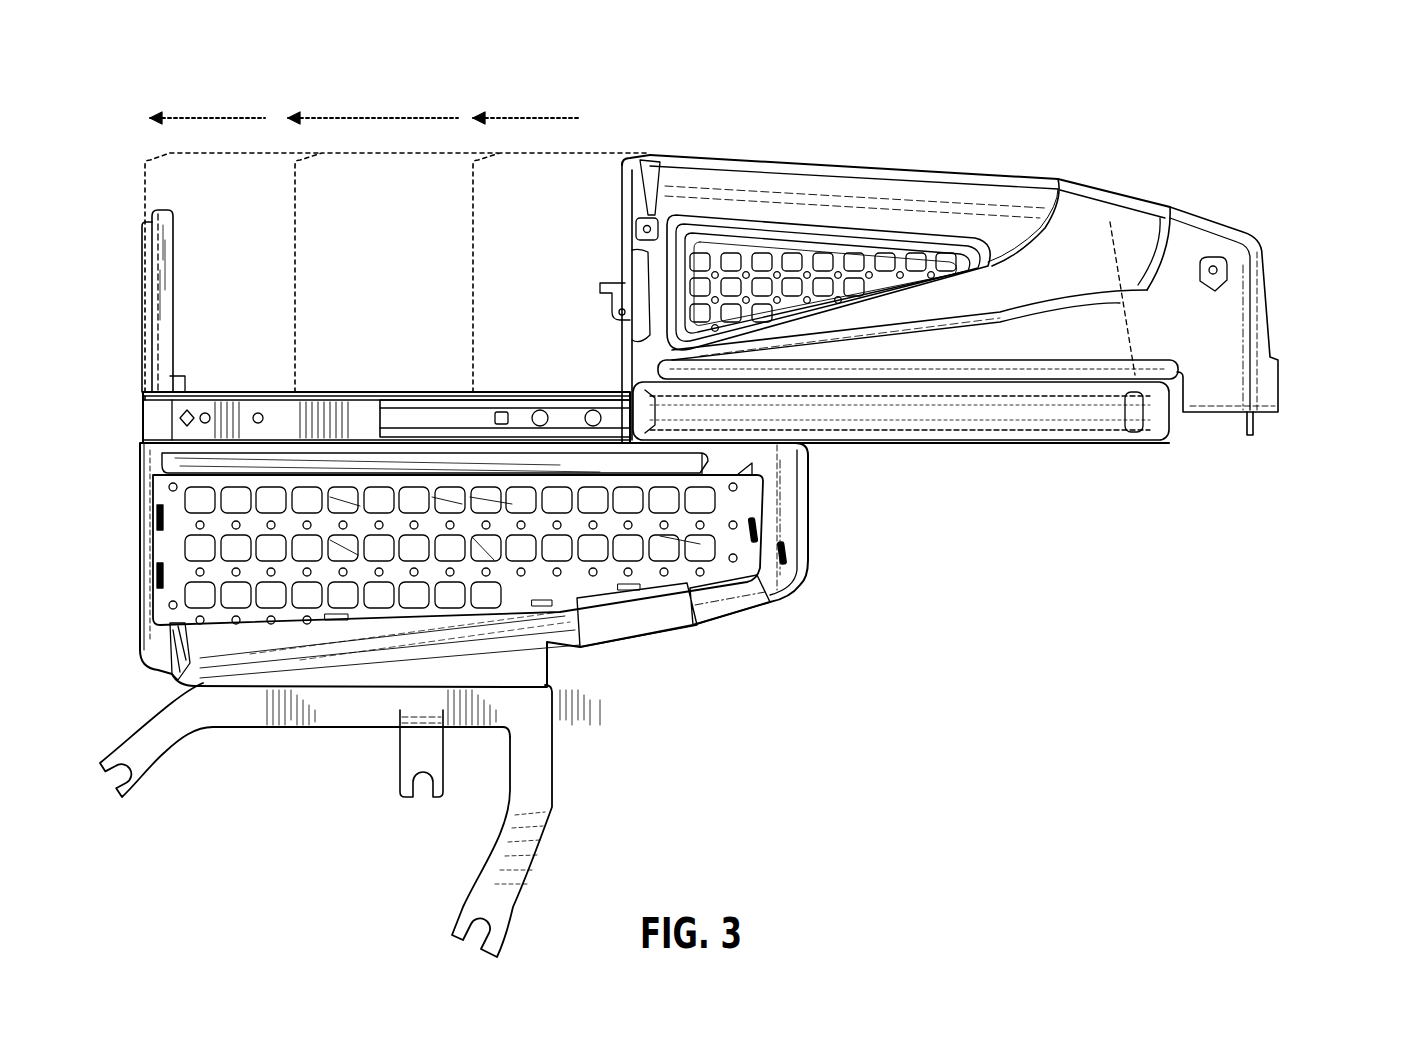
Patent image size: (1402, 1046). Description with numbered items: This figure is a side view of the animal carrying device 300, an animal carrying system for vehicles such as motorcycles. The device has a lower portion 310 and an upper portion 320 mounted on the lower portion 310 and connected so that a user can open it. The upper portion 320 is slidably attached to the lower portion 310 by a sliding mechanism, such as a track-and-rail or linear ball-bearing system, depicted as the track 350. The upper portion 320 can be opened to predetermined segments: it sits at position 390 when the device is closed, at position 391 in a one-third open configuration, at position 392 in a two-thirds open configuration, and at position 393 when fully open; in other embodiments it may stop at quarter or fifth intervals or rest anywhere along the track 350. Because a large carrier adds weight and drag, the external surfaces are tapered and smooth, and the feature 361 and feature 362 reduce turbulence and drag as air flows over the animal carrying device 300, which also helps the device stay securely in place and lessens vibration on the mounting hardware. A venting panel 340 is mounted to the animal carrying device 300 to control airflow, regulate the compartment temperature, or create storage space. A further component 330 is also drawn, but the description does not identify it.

The animal carrying device 300 is at (952, 687).
The lower portion 310 is at (735, 615).
The upper portion 320 is at (1260, 328).
The mounting bracket 330 is at (588, 777).
The venting panel 340 is at (750, 508).
The track 350 is at (427, 420).
The feature 361 is at (1043, 240).
The feature 362 is at (1165, 240).
The position 390 is at (140, 110).
The position 391 is at (305, 112).
The position 392 is at (485, 110).
The position 393 is at (623, 112).